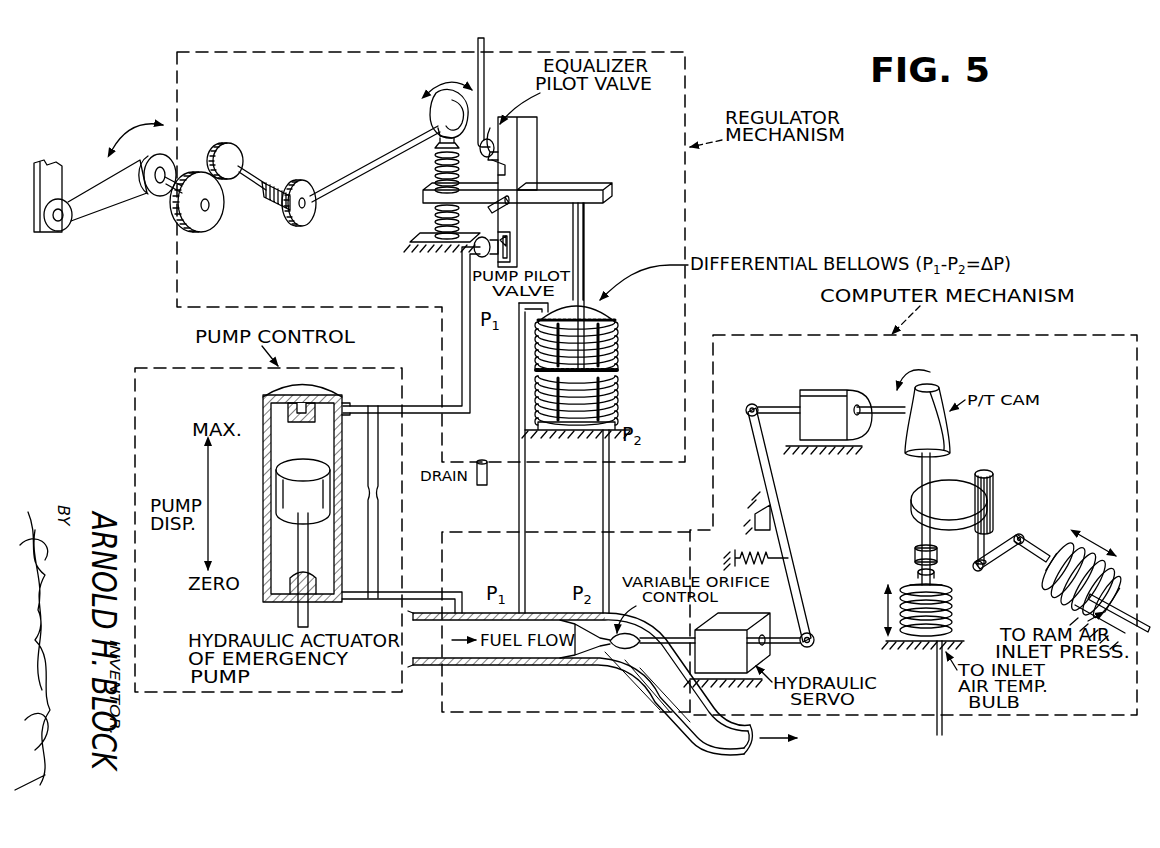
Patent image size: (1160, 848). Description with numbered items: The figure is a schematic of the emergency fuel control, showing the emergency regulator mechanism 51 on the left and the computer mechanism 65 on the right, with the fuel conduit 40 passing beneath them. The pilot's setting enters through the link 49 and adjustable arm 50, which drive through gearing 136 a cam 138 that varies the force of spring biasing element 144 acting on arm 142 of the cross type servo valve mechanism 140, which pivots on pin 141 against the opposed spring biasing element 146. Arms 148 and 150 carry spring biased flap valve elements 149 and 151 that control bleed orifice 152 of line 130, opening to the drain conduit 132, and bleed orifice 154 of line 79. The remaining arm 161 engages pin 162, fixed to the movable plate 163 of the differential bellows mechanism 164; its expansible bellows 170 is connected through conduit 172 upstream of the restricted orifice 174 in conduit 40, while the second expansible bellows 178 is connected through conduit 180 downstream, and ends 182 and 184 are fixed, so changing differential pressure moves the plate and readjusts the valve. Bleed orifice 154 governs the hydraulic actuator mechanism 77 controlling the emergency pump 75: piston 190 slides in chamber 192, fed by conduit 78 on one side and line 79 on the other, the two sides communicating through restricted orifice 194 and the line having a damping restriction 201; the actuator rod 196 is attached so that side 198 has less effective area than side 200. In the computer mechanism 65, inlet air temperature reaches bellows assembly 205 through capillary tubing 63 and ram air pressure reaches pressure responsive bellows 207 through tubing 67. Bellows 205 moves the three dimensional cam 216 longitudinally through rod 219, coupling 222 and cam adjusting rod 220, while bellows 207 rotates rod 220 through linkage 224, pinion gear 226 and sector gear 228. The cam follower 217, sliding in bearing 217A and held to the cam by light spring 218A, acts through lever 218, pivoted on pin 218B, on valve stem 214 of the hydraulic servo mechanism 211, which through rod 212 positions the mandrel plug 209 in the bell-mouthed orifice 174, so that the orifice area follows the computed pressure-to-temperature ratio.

The fuel conduit 40 is at (465, 666).
The link 49 is at (47, 198).
The adjustable arm 50 is at (110, 188).
The emergency regulator mechanism 51 is at (690, 242).
The capillary tubing 63 is at (943, 728).
The computer mechanism 65 is at (750, 332).
The tubing 67 is at (1120, 610).
The emergency pump 75 is at (133, 378).
The hydraulic actuator mechanism 77 is at (262, 416).
The conduit 78 is at (378, 598).
The line 79 is at (471, 384).
The line 130 is at (486, 44).
The drain conduit 132 is at (488, 470).
The gearing 136 is at (233, 190).
The cam 138 is at (432, 110).
The cross type servo valve mechanism 140 is at (545, 150).
The pin 141 is at (560, 175).
The arm 142 is at (425, 198).
The spring biasing element 144 is at (434, 172).
The spring biasing element 146 is at (432, 223).
The arm 148 is at (530, 135).
The flap valve element 149 is at (498, 166).
The arm 150 is at (512, 248).
The flap valve element 151 is at (512, 236).
The bleed orifice 152 is at (492, 126).
The bleed orifice 154 is at (478, 255).
The arm 161 is at (575, 189).
The pin 162 is at (586, 227).
The movable plate 163 is at (620, 371).
The differential bellows mechanism 164 is at (616, 356).
The expansible bellows 170 is at (614, 326).
The conduit 172 is at (518, 346).
The restricted orifice 174 is at (582, 656).
The second expansible bellows 178 is at (614, 410).
The conduit 180 is at (611, 484).
The end of bellows assembly 182 is at (600, 310).
The end of bellows assembly 184 is at (582, 428).
The piston 190 is at (272, 480).
The chamber 192 is at (368, 530).
The restricted orifice 194 is at (380, 496).
The actuator rod 196 is at (297, 606).
The side of piston 198 is at (283, 516).
The side of piston 200 is at (302, 460).
The restriction 201 is at (352, 403).
The bellows assembly 205 is at (952, 614).
The pressure responsive bellows 207 is at (1060, 597).
The mandrel plug 209 is at (626, 652).
The hydraulic servo mechanism 211 is at (737, 662).
The rod 212 is at (652, 645).
The valve stem 214 is at (786, 644).
The three dimensional cam 216 is at (940, 432).
The cam follower 217 is at (872, 405).
The bearing 217A is at (817, 438).
The lever 218 is at (766, 473).
The light spring 218A is at (748, 556).
The pin 218B is at (773, 526).
The rod 219 is at (917, 570).
The cam adjusting rod 220 is at (920, 474).
The coupling 222 is at (916, 553).
The linkage 224 is at (1012, 532).
The pinion gear 226 is at (992, 508).
The sector gear 228 is at (952, 478).